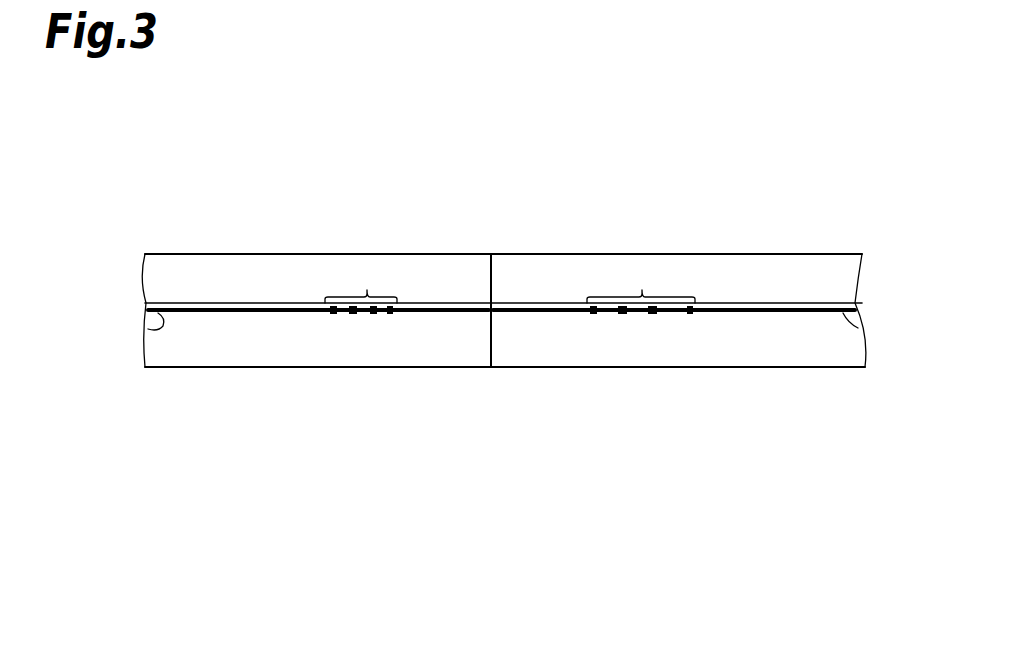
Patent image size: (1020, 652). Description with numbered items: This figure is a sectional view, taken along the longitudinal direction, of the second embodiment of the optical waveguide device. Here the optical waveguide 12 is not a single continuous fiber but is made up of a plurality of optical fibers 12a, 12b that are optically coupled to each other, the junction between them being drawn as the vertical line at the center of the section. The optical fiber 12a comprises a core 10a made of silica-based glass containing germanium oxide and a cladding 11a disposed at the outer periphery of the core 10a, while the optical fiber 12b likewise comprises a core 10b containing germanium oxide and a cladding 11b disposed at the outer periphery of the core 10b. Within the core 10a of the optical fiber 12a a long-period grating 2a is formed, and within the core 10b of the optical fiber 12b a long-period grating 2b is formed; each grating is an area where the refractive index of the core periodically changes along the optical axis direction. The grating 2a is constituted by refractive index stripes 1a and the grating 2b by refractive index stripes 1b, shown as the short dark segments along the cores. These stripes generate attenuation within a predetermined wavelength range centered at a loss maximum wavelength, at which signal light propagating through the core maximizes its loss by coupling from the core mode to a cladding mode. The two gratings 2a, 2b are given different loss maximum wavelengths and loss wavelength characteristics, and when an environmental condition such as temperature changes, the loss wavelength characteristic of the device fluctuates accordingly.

The refractive index stripes 1a is at (392, 313).
The refractive index stripes 1b is at (653, 313).
The long-period grating 2a is at (367, 290).
The long-period grating 2b is at (642, 290).
The core 10a is at (148, 329).
The core 10b is at (858, 328).
The cladding 11a is at (237, 360).
The cladding 11b is at (803, 357).
The optical waveguide 12 is at (583, 85).
The optical fiber 12a is at (293, 246).
The optical fiber 12b is at (724, 246).